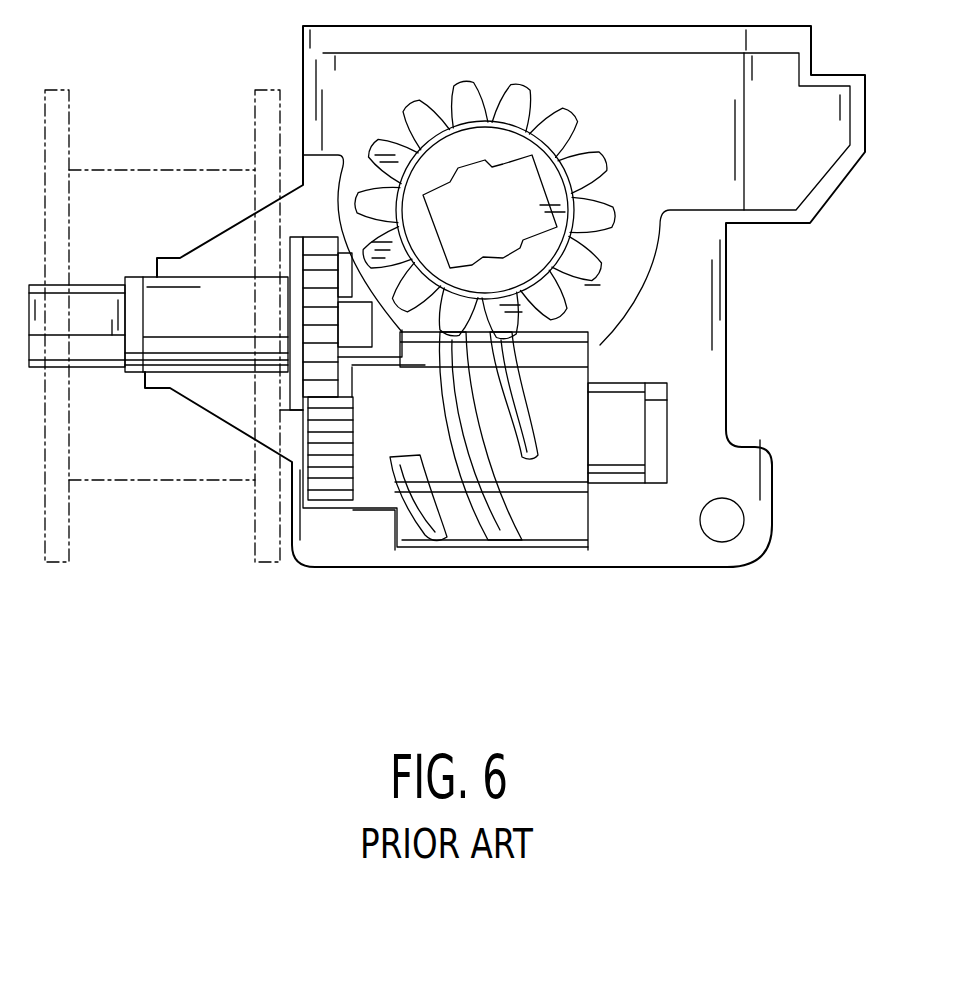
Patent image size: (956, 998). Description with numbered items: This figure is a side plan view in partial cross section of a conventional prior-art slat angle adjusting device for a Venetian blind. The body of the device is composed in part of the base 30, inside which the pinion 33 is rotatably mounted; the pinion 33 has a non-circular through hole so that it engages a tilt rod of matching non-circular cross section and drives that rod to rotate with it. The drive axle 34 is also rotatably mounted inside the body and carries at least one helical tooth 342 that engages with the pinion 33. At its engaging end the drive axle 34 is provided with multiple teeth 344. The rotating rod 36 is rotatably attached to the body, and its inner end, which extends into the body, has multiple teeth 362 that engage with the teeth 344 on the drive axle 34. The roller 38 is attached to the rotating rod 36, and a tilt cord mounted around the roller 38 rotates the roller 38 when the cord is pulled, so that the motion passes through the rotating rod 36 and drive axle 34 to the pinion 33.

The base 30 is at (742, 332).
The pinion 33 is at (620, 135).
The drive axle 34 is at (562, 492).
The helical tooth 342 is at (498, 510).
The teeth 344 is at (330, 480).
The rotating rod 36 is at (148, 405).
The teeth 362 is at (320, 273).
The roller 38 is at (142, 180).